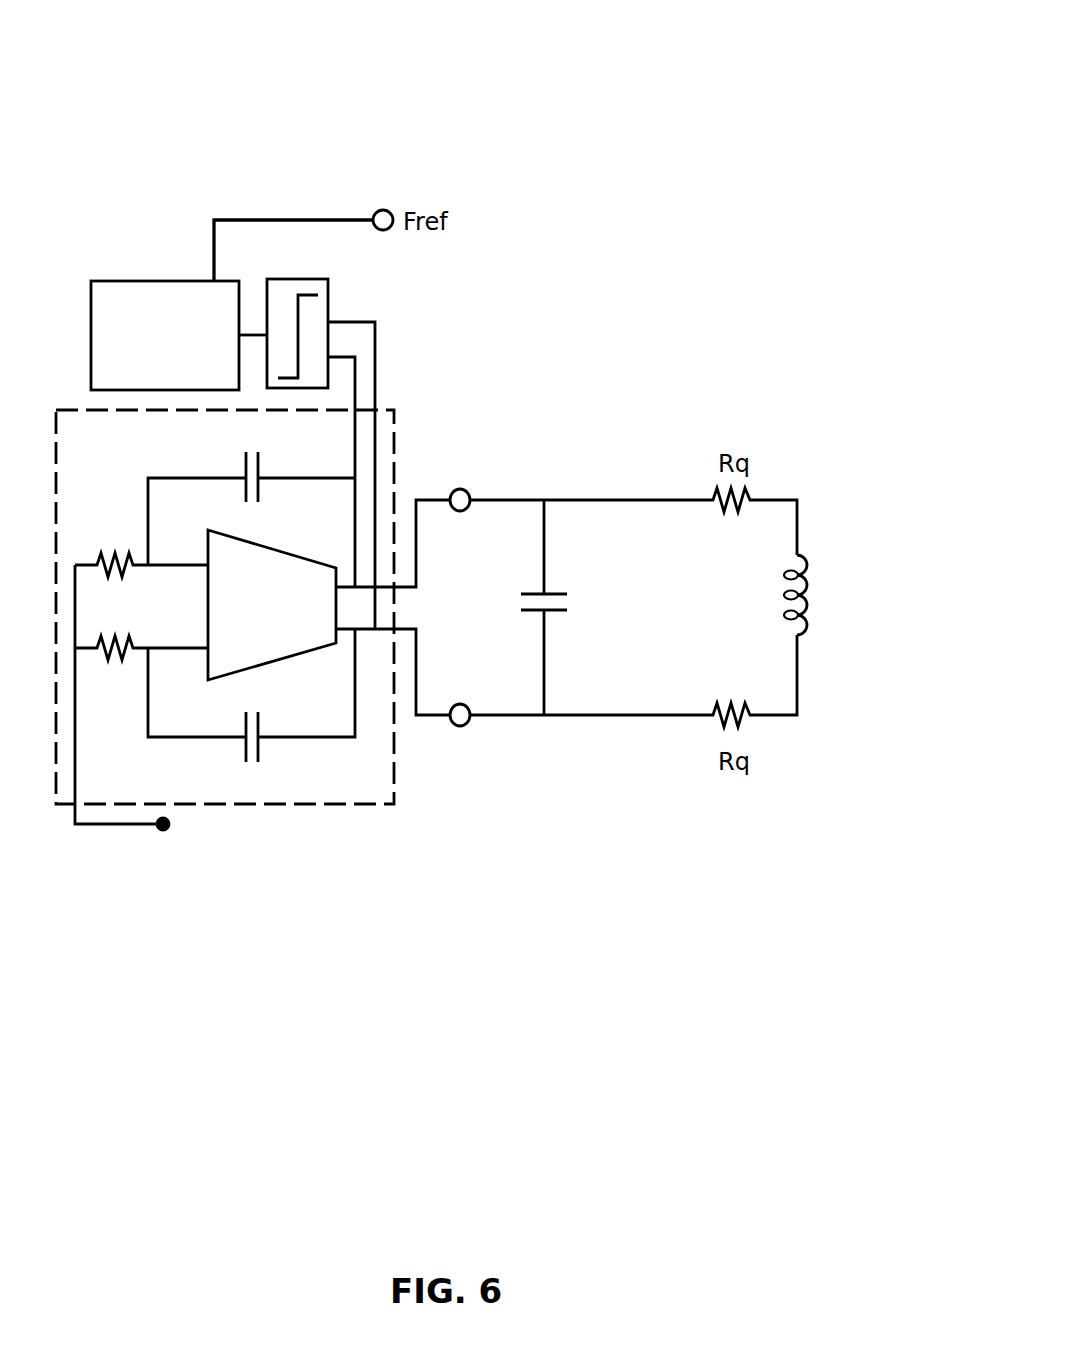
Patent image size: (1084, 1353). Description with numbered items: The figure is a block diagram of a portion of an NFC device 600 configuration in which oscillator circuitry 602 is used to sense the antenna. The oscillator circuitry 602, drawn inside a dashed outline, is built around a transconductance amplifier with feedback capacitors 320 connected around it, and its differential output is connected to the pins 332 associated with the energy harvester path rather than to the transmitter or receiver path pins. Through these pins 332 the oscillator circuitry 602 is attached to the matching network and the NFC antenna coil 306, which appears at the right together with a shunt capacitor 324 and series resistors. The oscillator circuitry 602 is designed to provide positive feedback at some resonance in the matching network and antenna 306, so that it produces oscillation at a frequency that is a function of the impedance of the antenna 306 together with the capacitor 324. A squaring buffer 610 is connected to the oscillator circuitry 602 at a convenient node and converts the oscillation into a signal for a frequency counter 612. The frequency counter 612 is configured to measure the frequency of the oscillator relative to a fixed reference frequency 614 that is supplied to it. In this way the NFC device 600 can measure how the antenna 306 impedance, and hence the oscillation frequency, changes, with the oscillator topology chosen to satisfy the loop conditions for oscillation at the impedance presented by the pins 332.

The NFC device 600 is at (697, 60).
The oscillator circuitry 602 is at (267, 622).
The squaring buffer 610 is at (297, 279).
The frequency counter 612 is at (167, 281).
The fixed reference frequency 614 is at (333, 220).
The capacitors 320 is at (258, 495).
The capacitor 324 is at (552, 612).
The EH path pins 332 is at (463, 490).
The NFC antenna coil 306 is at (800, 637).